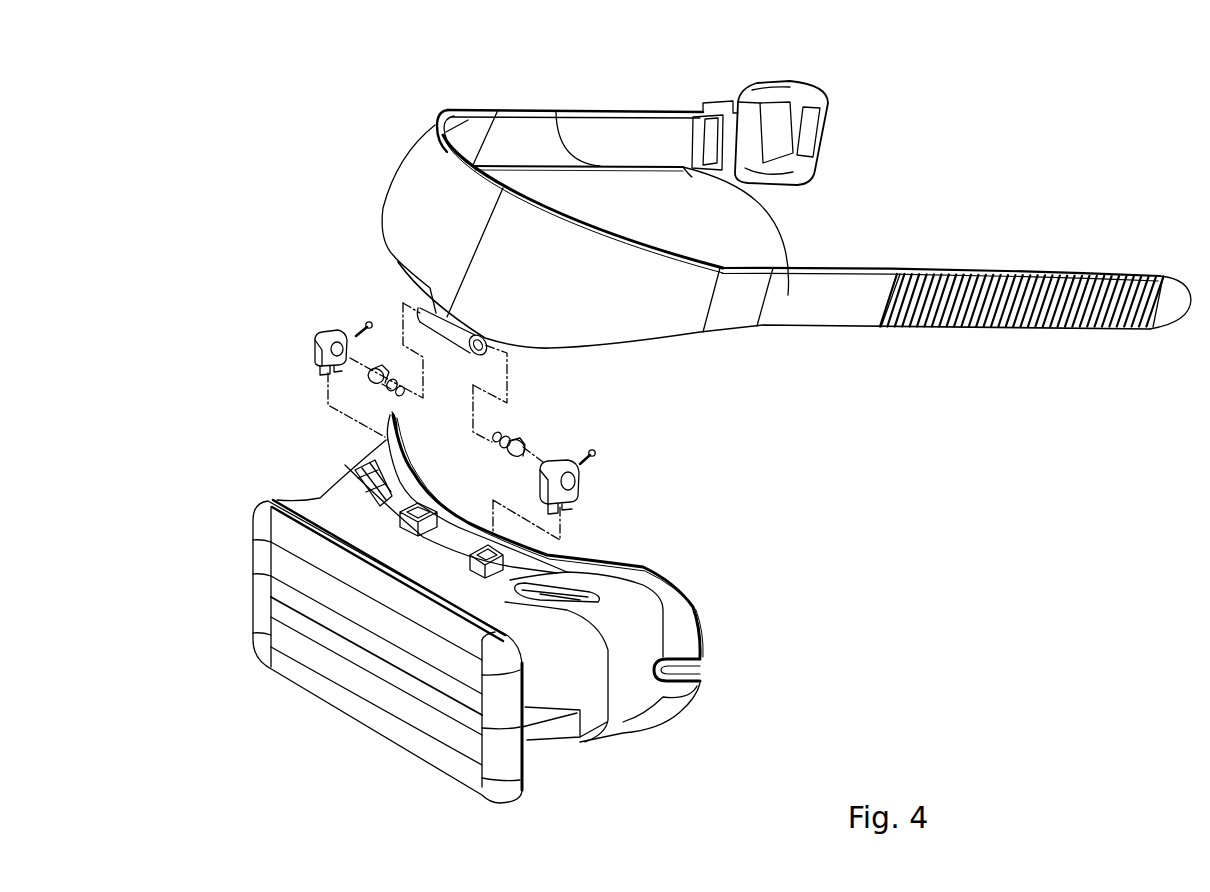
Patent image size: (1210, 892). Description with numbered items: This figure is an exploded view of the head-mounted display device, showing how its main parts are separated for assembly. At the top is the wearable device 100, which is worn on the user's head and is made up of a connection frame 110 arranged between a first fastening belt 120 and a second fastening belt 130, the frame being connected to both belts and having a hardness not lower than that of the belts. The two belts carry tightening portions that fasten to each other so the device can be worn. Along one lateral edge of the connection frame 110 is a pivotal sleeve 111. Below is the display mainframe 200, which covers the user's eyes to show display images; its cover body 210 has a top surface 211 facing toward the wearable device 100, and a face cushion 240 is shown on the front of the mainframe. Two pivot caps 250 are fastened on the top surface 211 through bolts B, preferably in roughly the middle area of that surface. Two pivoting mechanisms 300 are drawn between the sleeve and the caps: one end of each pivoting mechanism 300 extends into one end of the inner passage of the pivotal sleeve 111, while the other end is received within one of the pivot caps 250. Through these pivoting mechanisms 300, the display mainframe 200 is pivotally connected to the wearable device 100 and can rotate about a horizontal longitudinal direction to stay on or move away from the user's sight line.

The wearable device 100 is at (580, 58).
The connection frame 110 is at (417, 186).
The pivotal sleeve 111 is at (392, 260).
The first fastening belt 120 is at (505, 120).
The second fastening belt 130 is at (556, 112).
The display mainframe 200 is at (183, 438).
The cover body 210 is at (322, 500).
The top surface 211 is at (513, 582).
The face cushion 240 is at (262, 538).
The pivot cap 250 is at (323, 343).
The pivoting mechanism 300 is at (374, 368).
The bolt B is at (360, 323).